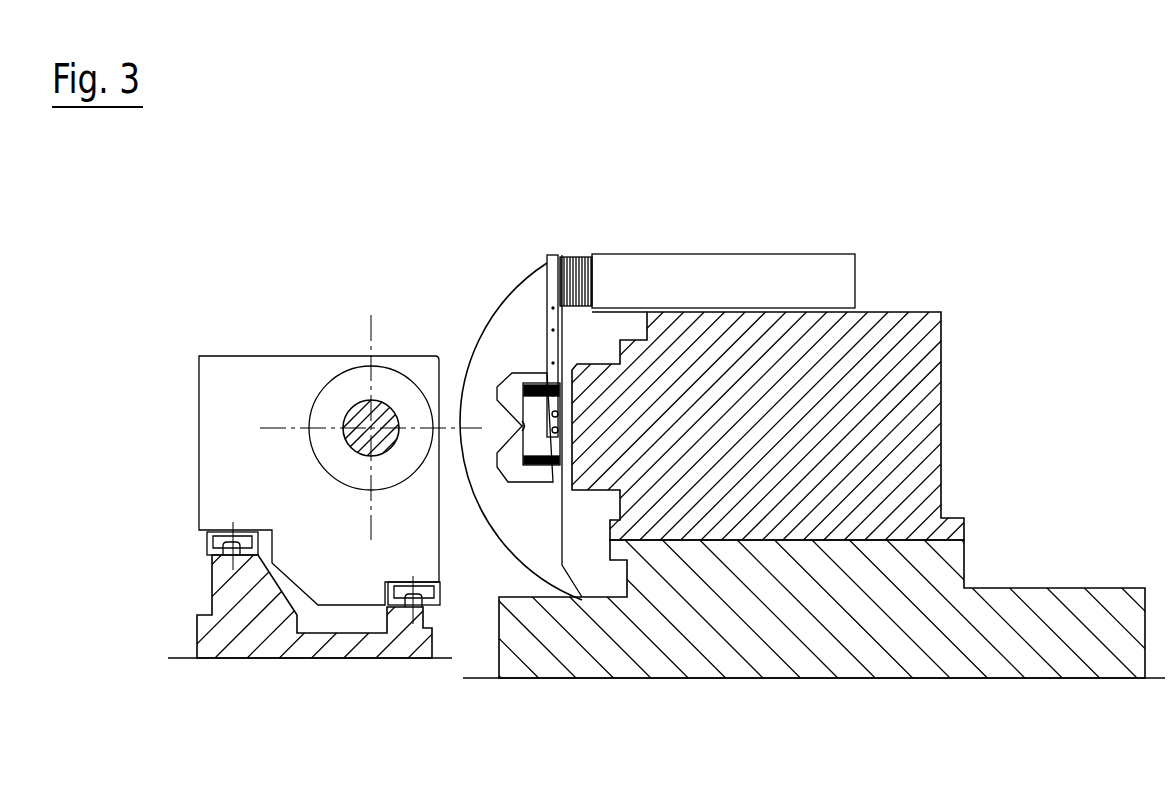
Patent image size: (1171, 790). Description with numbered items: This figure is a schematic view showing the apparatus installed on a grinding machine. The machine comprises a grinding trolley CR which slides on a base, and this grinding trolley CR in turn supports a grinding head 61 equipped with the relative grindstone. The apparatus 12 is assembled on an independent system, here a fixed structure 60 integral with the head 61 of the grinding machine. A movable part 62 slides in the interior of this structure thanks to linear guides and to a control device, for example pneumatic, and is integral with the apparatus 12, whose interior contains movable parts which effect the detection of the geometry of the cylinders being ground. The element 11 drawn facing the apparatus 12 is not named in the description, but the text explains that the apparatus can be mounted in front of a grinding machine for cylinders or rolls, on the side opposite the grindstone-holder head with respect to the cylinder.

The spindle / headstock 11 is at (361, 409).
The apparatus 12 is at (513, 357).
The fixed structure 60 is at (683, 285).
The grinding head 61 is at (877, 347).
The movable part 62 is at (553, 318).
The grinding trolley CR is at (1012, 613).